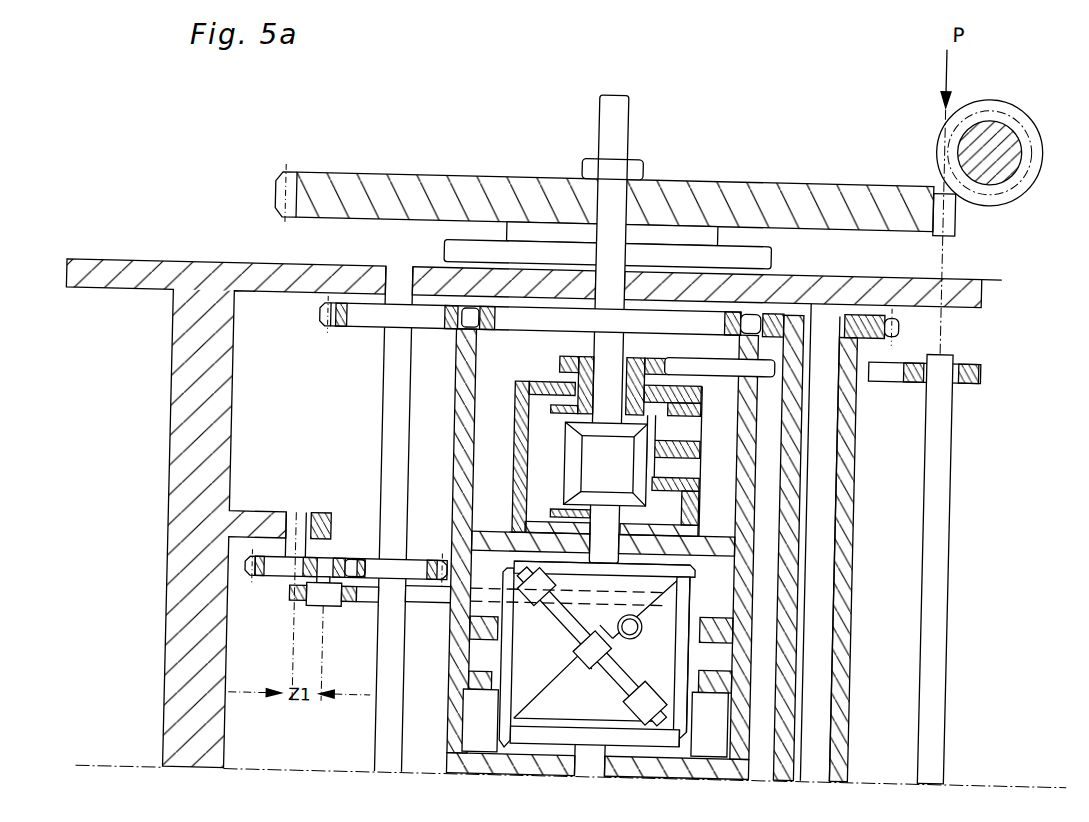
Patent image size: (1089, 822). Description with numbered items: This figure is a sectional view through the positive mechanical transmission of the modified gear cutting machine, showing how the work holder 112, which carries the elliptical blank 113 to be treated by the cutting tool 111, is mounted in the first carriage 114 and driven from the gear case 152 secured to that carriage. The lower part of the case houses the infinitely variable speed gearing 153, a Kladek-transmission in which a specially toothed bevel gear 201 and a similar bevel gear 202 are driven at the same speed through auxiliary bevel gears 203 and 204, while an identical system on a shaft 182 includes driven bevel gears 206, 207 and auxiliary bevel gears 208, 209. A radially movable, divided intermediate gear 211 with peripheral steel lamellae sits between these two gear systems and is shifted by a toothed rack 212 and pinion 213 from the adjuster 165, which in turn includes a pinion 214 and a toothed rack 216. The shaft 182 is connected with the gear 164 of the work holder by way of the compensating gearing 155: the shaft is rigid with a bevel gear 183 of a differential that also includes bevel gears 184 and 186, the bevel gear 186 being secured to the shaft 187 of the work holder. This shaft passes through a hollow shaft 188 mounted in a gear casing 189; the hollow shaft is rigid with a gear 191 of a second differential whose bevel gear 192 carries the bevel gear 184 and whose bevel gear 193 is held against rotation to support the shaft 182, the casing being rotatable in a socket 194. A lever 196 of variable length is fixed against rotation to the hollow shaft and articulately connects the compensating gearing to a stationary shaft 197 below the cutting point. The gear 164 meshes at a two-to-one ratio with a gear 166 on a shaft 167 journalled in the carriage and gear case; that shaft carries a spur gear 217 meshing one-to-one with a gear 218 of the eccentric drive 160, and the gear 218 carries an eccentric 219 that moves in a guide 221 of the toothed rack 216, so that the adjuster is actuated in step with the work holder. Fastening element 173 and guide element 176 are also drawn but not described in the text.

The cutting tool 111 is at (1034, 114).
The work holder 112 is at (772, 244).
The elliptical blank 113 is at (745, 160).
The first carriage 114 is at (232, 267).
The gear case 152 is at (458, 385).
The infinitely variable speed gearing 153 is at (440, 743).
The compensating gearing 155 is at (494, 446).
The eccentric drive 160 is at (290, 484).
The gear 164 is at (522, 322).
The adjuster 165 is at (770, 578).
The gear 166 is at (364, 322).
The shaft 167 is at (386, 379).
The fastening bolt 173 is at (900, 312).
The guide tube 176 is at (828, 412).
The shaft 182 is at (532, 523).
The bevel gear 183 is at (581, 483).
The bevel gear 184 is at (644, 472).
The bevel gear 186 is at (581, 428).
The shaft 187 is at (596, 334).
The hollow shaft 188 is at (562, 353).
The gear casing 189 is at (518, 490).
The gear 191 is at (690, 380).
The bevel gear 192 is at (694, 426).
The bevel gear 193 is at (692, 488).
The socket 194 is at (716, 518).
The lever 196 is at (714, 348).
The stationary shaft 197 is at (955, 412).
The bevel gear 201 is at (560, 736).
The bevel gear 202 is at (686, 700).
The auxiliary bevel gear 203 is at (655, 738).
The auxiliary bevel gear 204 is at (690, 726).
The driven bevel gear 206 is at (690, 572).
The driven bevel gear 207 is at (505, 680).
The auxiliary bevel gear 208 is at (697, 556).
The auxiliary bevel gear 209 is at (505, 705).
The intermediate gear 211 is at (480, 613).
The toothed rack 212 is at (668, 672).
The pinion 213 is at (325, 602).
The pinion 214 is at (652, 612).
The toothed rack 216 is at (438, 554).
The spur gear 217 is at (354, 552).
The gear 218 is at (270, 573).
The eccentric 219 is at (334, 571).
The guide 221 is at (305, 598).